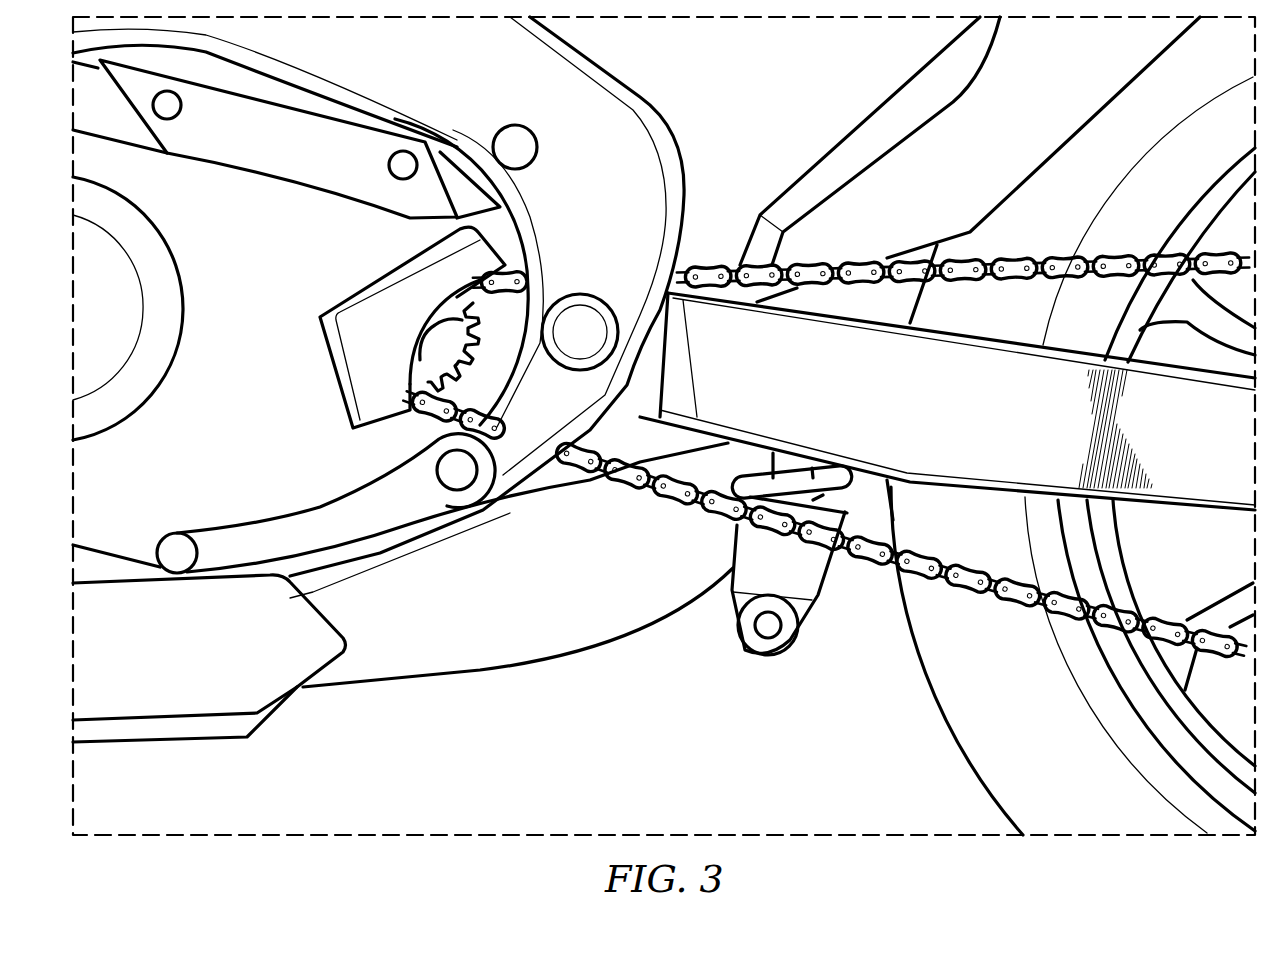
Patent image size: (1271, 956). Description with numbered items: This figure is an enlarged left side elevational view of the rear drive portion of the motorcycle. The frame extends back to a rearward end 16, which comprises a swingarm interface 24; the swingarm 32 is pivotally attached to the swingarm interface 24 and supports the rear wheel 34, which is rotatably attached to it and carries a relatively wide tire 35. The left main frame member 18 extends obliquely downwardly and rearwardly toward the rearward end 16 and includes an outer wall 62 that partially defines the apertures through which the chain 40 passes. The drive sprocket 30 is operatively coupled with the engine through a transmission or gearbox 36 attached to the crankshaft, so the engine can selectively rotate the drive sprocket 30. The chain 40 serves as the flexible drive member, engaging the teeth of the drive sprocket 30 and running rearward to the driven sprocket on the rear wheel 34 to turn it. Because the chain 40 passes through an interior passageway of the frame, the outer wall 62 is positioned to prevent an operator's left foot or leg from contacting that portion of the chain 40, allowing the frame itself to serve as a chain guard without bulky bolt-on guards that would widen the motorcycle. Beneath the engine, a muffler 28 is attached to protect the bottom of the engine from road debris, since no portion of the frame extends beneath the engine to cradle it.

The rearward end 16 is at (720, 152).
The left main frame member 18 is at (651, 91).
The swingarm interface 24 is at (620, 434).
The muffler 28 is at (495, 675).
The drive sprocket 30 is at (488, 356).
The swingarm 32 is at (958, 488).
The rear wheel 34 is at (903, 663).
The tire 35 is at (953, 738).
The transmission or gearbox 36 is at (295, 212).
The chain 40 is at (1013, 603).
The outer wall 62 is at (520, 440).